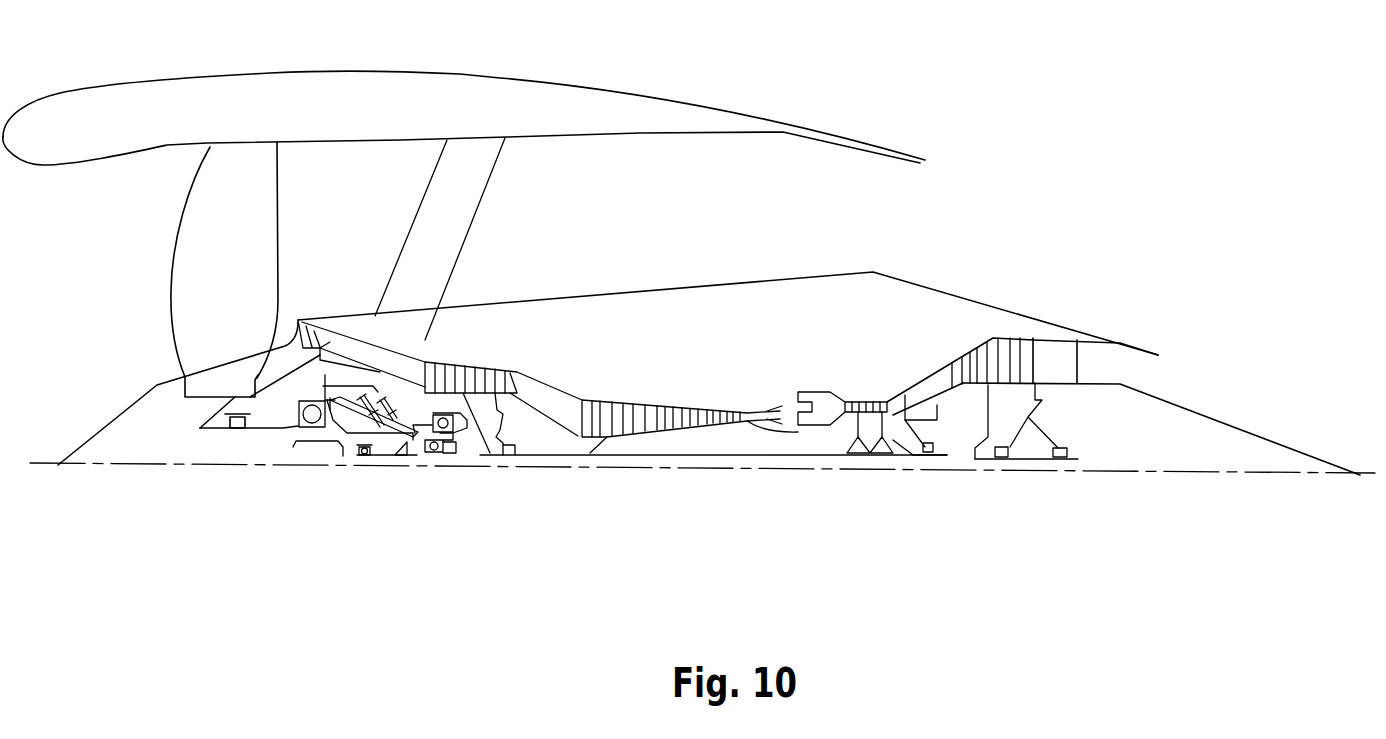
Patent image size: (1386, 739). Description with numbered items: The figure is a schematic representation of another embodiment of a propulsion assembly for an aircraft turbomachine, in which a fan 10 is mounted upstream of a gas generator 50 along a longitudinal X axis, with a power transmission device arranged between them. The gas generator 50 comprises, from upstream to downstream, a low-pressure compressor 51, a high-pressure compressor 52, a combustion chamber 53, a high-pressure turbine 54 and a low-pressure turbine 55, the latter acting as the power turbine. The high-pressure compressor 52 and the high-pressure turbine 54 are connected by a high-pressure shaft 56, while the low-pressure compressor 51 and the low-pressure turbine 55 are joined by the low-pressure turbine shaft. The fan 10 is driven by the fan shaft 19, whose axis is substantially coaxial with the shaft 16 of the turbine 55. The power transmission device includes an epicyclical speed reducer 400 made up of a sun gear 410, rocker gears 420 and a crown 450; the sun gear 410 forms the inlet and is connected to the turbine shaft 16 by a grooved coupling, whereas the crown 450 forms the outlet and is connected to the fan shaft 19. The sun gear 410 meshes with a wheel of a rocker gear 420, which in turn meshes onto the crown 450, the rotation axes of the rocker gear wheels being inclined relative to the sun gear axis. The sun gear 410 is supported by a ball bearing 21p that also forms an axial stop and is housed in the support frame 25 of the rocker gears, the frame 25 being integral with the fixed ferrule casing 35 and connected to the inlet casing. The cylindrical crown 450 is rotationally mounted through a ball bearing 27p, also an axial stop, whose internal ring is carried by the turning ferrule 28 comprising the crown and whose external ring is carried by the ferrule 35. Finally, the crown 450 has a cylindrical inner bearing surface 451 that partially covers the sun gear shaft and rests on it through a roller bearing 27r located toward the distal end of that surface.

The fan 10 is at (138, 270).
The turbine shaft 16 is at (738, 457).
The fan shaft 19 is at (292, 448).
The bearing 21p is at (452, 452).
The support frame 25 is at (425, 452).
The bearing 27p is at (458, 360).
The bearing 27r is at (365, 458).
The turning ferrule 28 is at (445, 358).
The ferrule casing 35 is at (397, 393).
The gas generator 50 is at (720, 358).
The low-pressure compressor 51 is at (502, 370).
The high-pressure compressor 52 is at (620, 410).
The combustion chamber 53 is at (813, 390).
The high-pressure turbine 54 is at (868, 402).
The low-pressure turbine 55 is at (1000, 345).
The high-pressure shaft 56 is at (917, 457).
The speed reducer 400 is at (378, 446).
The sun gear 410 is at (403, 456).
The rocker gears 420 is at (370, 365).
The crown 450 is at (312, 327).
The cylindrical inner bearing surface 451 is at (343, 456).
The longitudinal axis X is at (1165, 474).